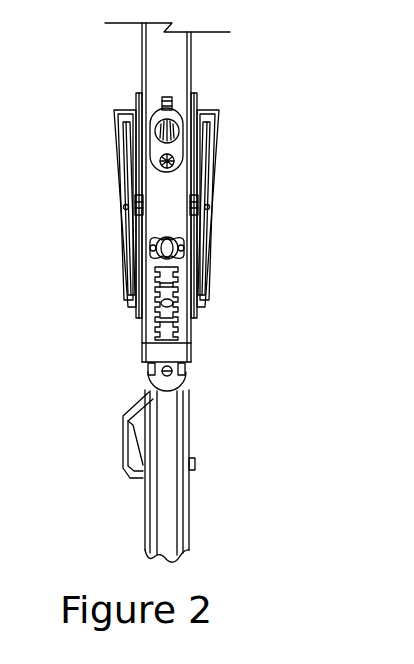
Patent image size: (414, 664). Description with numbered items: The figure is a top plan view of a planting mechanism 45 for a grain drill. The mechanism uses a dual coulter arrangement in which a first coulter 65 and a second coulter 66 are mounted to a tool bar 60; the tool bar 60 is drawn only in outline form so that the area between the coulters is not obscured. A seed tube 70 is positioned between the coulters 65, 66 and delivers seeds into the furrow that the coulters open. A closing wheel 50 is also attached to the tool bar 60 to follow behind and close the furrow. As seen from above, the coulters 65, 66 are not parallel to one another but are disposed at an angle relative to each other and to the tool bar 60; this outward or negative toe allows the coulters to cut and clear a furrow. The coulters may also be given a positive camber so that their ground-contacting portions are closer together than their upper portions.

The planting mechanism 45 is at (315, 238).
The closing wheel 50 is at (183, 429).
The tool bar 60 is at (140, 72).
The coulter 65 is at (117, 147).
The coulter 66 is at (205, 165).
The seed tube 70 is at (172, 130).